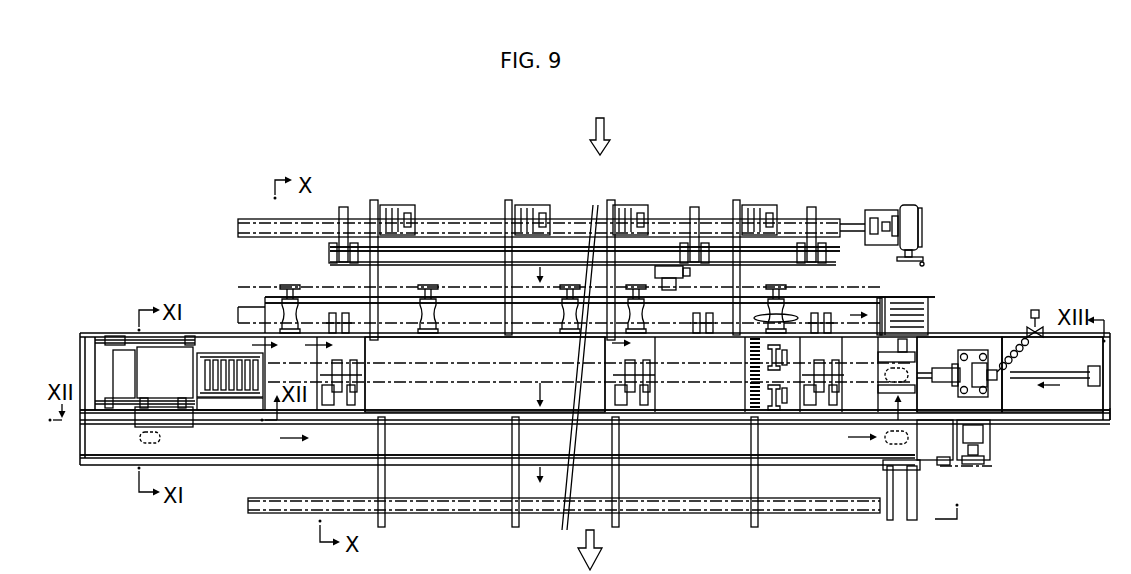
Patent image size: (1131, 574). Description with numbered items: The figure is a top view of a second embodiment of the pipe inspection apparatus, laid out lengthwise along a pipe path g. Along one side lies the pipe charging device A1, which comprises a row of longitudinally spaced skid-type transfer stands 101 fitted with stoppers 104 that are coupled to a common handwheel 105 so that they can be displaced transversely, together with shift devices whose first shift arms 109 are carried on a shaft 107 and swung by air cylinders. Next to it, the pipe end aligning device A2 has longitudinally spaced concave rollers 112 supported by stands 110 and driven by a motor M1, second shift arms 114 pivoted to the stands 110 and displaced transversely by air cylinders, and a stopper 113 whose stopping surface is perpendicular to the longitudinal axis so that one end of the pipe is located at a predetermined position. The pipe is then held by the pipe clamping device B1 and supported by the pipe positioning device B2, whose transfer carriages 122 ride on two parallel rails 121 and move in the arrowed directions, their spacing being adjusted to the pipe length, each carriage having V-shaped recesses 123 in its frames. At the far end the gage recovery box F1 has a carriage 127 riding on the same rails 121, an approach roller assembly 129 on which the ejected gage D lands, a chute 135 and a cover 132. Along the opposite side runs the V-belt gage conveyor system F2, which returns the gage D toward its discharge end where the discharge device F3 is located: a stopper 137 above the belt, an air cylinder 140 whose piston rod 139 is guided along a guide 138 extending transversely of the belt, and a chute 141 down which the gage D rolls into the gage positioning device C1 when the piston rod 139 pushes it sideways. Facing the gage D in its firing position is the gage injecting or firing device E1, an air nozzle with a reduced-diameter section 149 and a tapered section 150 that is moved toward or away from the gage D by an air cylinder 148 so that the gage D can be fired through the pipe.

The transfer stand 101 is at (375, 200).
The stopper 104 is at (525, 207).
The handwheel 105 is at (920, 257).
The shaft 107 is at (420, 254).
The first shift arm 109 is at (343, 207).
The stand 110 is at (474, 300).
The concave roller 112 is at (436, 300).
The stopper 113 is at (878, 300).
The second shift arm 114 is at (334, 312).
The rail 121 is at (493, 340).
The transfer carriage 122 is at (350, 348).
The V-shaped recess 123 is at (358, 378).
The carriage 127 is at (255, 407).
The approach roller assembly 129 is at (228, 397).
The cover 132 is at (172, 352).
The chute 135 is at (182, 420).
The stopper 137 is at (913, 452).
The guide 138 is at (888, 506).
The piston rod 139 is at (917, 470).
The air cylinder 140 is at (900, 522).
The chute 141 is at (893, 400).
The air cylinder 148 is at (1047, 373).
The reduced-diameter section 149 is at (953, 386).
The tapered section 150 is at (958, 350).
The pipe charging device A1 is at (820, 198).
The pipe end aligning device A2 is at (274, 288).
The pipe clamping device B1 is at (748, 374).
The pipe positioning device B2 is at (371, 362).
The gage positioning device C1 is at (923, 389).
The gage D is at (140, 437).
The gage injecting or firing device E1 is at (965, 350).
The gage recovery box F1 is at (144, 365).
The gage conveyor system F2 is at (253, 448).
The discharge device F3 is at (920, 496).
The motor M1 is at (688, 277).
The glass rod g is at (236, 227).